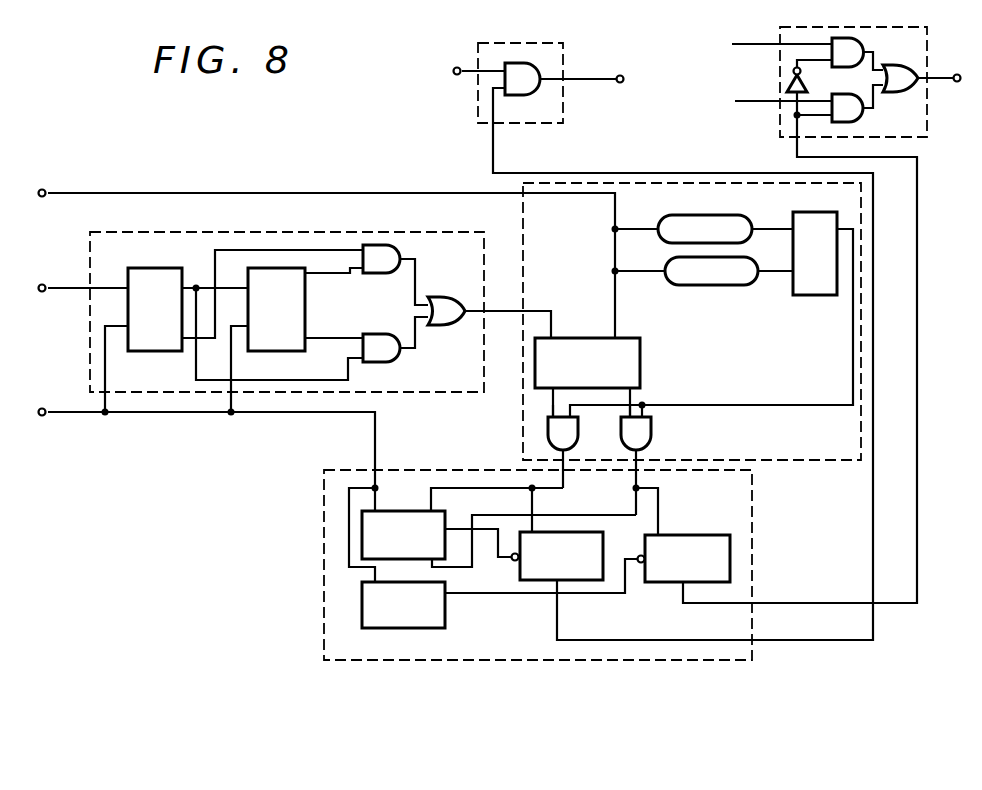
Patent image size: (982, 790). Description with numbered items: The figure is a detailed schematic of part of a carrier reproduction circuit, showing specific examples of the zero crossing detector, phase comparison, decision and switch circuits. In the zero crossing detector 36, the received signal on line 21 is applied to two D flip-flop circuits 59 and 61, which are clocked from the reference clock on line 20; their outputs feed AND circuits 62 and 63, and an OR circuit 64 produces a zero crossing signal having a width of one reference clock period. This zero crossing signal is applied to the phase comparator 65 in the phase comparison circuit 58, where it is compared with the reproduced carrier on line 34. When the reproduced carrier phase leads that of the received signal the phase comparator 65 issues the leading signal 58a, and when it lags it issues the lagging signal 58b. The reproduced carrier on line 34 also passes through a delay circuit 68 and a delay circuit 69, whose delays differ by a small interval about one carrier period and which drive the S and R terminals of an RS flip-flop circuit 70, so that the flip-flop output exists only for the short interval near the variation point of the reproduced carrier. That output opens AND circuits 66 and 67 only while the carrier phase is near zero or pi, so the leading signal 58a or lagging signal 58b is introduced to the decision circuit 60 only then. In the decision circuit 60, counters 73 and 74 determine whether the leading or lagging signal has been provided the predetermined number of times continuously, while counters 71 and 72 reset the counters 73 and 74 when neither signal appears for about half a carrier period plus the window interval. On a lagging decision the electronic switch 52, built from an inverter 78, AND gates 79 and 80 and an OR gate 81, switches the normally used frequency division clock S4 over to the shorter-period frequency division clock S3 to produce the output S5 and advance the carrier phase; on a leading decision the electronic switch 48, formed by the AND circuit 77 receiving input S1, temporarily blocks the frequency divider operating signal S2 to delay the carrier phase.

The reference clock line 20 is at (190, 455).
The received signal line 21 is at (67, 288).
The reproduced carrier signal line 34 is at (310, 259).
The zero crossing detector 36 is at (128, 232).
The electronic switch 48 is at (545, 122).
The electronic switch 52 is at (927, 120).
The phase comparison circuit 58 is at (525, 213).
The leading signal 58a is at (548, 405).
The lagging signal 58b is at (632, 397).
The D flip-flop circuit 59 is at (157, 352).
The decision circuit 60 is at (325, 501).
The D flip-flop circuit 61 is at (278, 352).
The AND circuit 62 is at (403, 250).
The AND circuit 63 is at (373, 364).
The OR circuit 64 is at (443, 327).
The phase comparator 65 is at (622, 338).
The AND circuit 66 is at (580, 437).
The AND circuit 67 is at (652, 436).
The delay circuit 68 is at (700, 215).
The delay circuit 69 is at (714, 285).
The RS flip-flop circuit 70 is at (822, 287).
The counter 71 is at (402, 509).
The counter 72 is at (447, 612).
The counter 73 is at (604, 557).
The counter 74 is at (702, 533).
The AND circuit 77 is at (520, 66).
The inverter 78 is at (806, 83).
The AND gate 79 is at (865, 43).
The AND gate 80 is at (843, 121).
The OR gate 81 is at (900, 93).
The signal S1 is at (475, 59).
The frequency divider operating signal S2 is at (599, 76).
The frequency division clock S3 is at (779, 116).
The frequency division clock S4 is at (777, 60).
The signal S5 is at (942, 66).